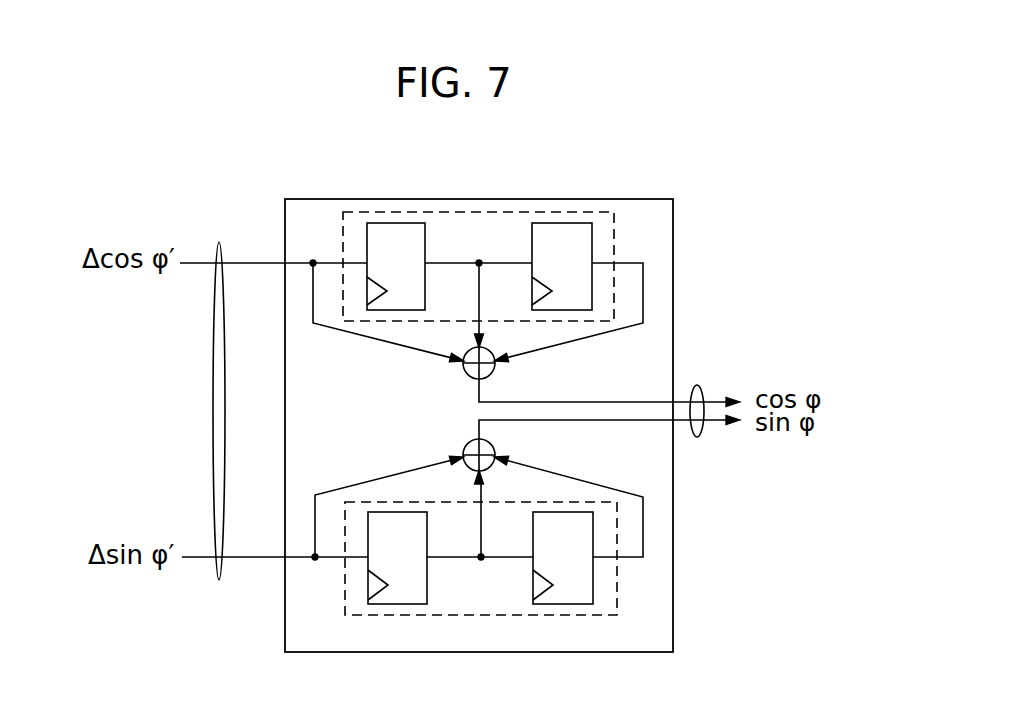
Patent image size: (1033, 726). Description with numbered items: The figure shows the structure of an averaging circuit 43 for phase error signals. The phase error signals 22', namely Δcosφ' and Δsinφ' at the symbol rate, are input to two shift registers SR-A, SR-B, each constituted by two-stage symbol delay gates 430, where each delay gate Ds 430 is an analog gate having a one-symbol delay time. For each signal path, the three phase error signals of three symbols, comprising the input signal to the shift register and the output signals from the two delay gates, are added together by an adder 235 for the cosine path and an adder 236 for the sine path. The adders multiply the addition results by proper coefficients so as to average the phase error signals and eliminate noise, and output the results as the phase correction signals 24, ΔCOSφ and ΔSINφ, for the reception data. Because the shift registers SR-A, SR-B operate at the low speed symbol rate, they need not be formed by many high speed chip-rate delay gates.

The averaging circuit 43 is at (513, 199).
The symbol delay gate 430 is at (397, 223).
The adder 235 is at (464, 370).
The adder 236 is at (464, 452).
The phase correction signals 24 is at (697, 385).
The phase error signals 22' is at (197, 453).
The shift register SR-A is at (343, 238).
The shift register SR-B is at (617, 583).